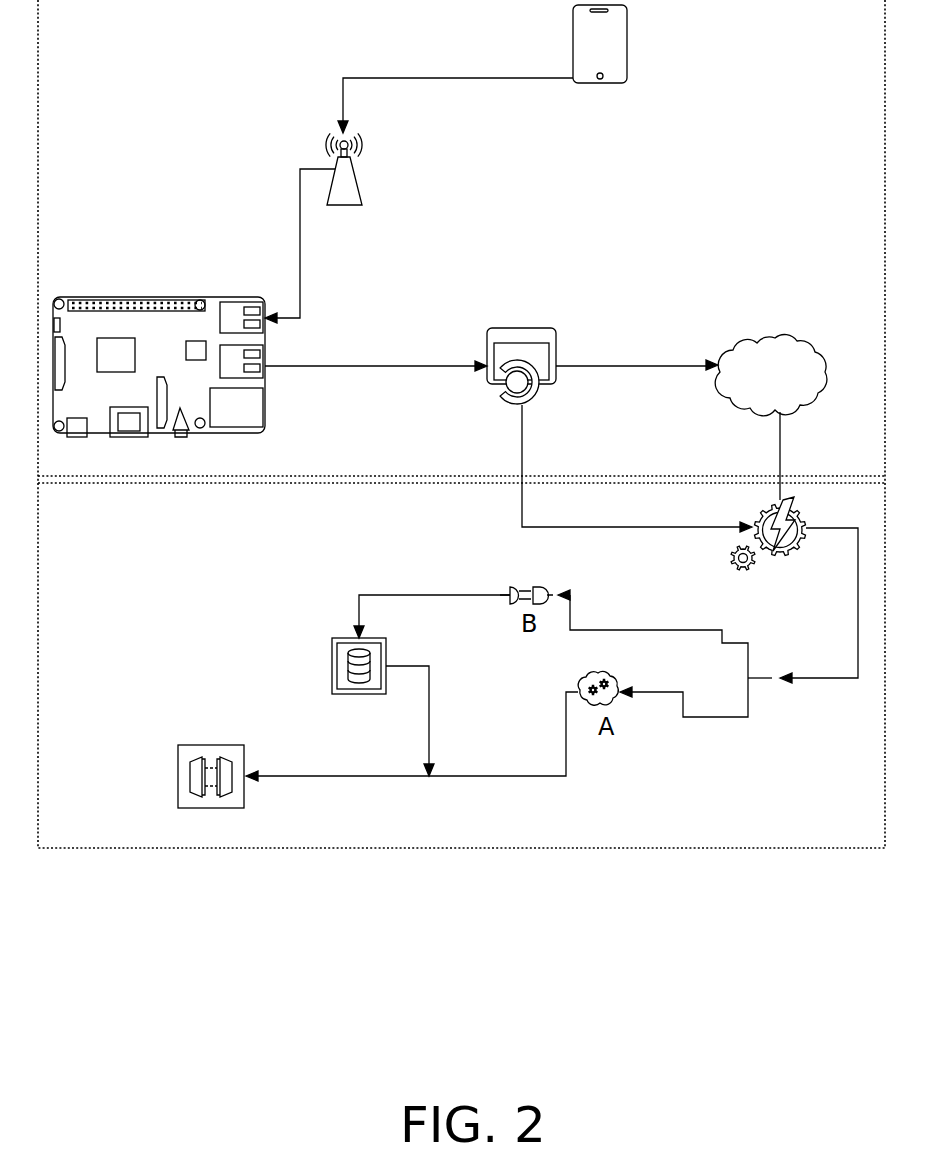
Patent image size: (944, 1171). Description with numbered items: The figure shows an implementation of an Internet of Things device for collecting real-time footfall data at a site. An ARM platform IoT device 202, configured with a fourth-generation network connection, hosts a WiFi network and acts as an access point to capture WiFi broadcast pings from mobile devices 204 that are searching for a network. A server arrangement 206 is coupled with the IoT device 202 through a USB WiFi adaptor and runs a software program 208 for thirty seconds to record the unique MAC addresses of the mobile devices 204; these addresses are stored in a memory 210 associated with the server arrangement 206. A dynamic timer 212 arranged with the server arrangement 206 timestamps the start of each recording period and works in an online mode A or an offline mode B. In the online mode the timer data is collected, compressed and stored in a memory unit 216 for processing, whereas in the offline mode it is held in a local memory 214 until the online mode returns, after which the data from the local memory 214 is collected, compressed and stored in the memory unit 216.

The IoT device 202 is at (387, 185).
The mobile devices 204 is at (643, 64).
The server arrangement 206 is at (198, 382).
The software program 208 is at (560, 377).
The memory 210 is at (799, 390).
The dynamic timer 212 is at (798, 550).
The local memory 214 is at (378, 690).
The memory unit 216 is at (237, 797).